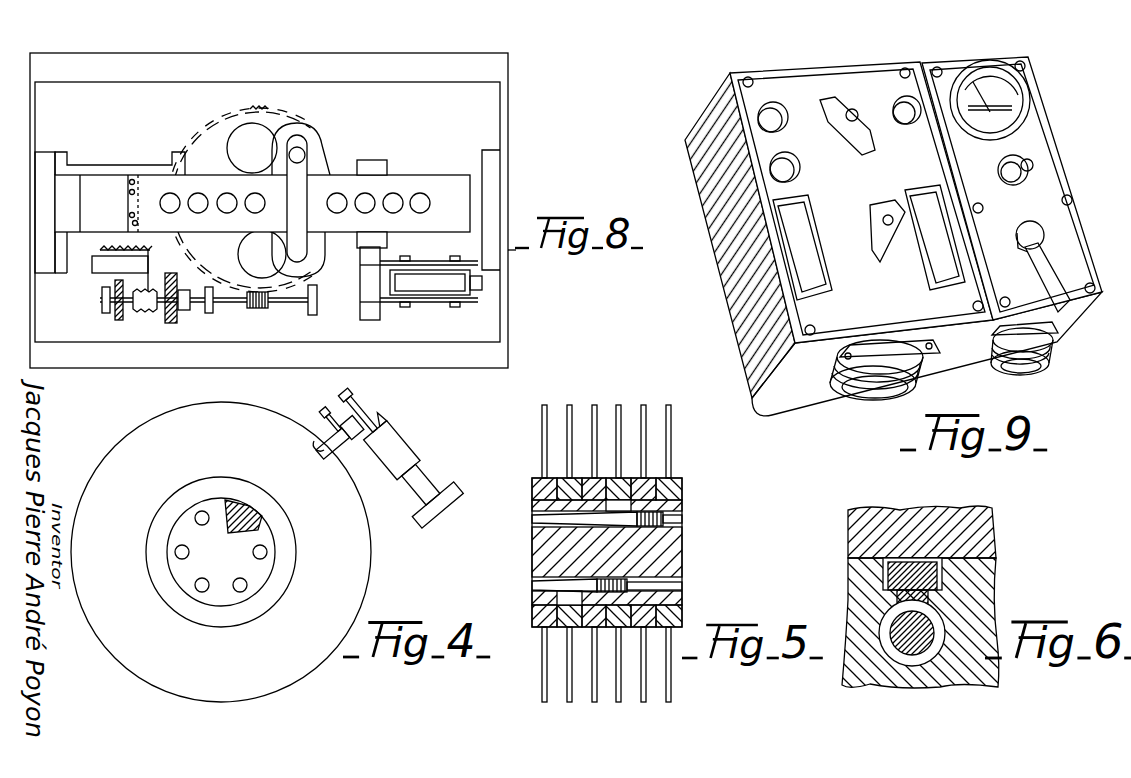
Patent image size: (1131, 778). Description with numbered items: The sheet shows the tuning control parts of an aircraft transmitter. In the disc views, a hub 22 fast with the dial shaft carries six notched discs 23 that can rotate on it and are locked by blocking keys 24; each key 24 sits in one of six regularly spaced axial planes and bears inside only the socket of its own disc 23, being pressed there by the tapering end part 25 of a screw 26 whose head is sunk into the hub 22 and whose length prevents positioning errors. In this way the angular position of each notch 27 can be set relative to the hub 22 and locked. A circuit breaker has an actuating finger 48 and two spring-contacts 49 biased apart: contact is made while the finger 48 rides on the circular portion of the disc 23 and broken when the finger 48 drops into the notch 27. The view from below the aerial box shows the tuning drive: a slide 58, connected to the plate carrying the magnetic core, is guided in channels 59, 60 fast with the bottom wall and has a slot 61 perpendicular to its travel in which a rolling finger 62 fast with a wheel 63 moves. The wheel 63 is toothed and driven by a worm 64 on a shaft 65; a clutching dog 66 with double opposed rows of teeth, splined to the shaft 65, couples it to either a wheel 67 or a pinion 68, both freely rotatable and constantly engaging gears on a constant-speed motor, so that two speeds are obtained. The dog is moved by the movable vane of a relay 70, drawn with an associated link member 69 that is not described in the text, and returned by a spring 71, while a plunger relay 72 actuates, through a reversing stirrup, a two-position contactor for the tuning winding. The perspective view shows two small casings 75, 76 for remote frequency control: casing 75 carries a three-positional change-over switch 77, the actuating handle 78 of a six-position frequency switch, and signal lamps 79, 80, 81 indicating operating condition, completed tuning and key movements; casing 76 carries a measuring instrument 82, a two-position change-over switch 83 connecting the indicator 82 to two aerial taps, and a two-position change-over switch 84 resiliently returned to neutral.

In FIG. 4, the hub 22 is at (185, 580).
In FIG. 5, the hub 22 is at (540, 562).
In FIG. 6, the hub 22 is at (992, 622).
In FIG. 4, the notched disc 23 is at (250, 417).
In FIG. 5, the notched disc 23 is at (543, 432).
In FIG. 5, the blocking key 24 is at (620, 504).
In FIG. 6, the blocking key 24 is at (946, 560).
In FIG. 5, the tapering end part 25 is at (568, 517).
In FIG. 5, the screw 26 is at (672, 512).
In FIG. 4, the notch 27 is at (316, 444).
In FIG. 4, the actuating finger 48 is at (346, 440).
In FIG. 4, the spring-contact 49 is at (388, 423).
In FIG. 8, the slide 58 is at (146, 215).
In FIG. 8, the channel 59 is at (115, 167).
In FIG. 8, the channel 60 is at (376, 167).
In FIG. 8, the slot 61 is at (297, 177).
In FIG. 8, the rolling finger 62 is at (290, 155).
In FIG. 8, the wheel 63 is at (240, 280).
In FIG. 8, the worm 64 is at (258, 308).
In FIG. 8, the shaft 65 is at (296, 303).
In FIG. 8, the clutching dog 66 is at (145, 310).
In FIG. 8, the wheel 67 is at (173, 316).
In FIG. 8, the pinion 68 is at (110, 308).
In FIG. 8, the link 69 is at (150, 272).
In FIG. 8, the relay 70 is at (100, 268).
In FIG. 8, the spring 71 is at (100, 252).
In FIG. 8, the plunger relay 72 is at (432, 282).
In FIG. 9, the casing 75 is at (782, 80).
In FIG. 9, the casing 76 is at (950, 70).
In FIG. 9, the 3-positional change-over switch 77 is at (852, 108).
In FIG. 9, the actuating handle 78 is at (868, 236).
In FIG. 9, the signal lamp 79 is at (910, 125).
In FIG. 9, the signal lamp 80 is at (783, 110).
In FIG. 9, the signal lamp 81 is at (801, 166).
In FIG. 9, the measuring instrument 82 is at (1020, 116).
In FIG. 9, the change-over switch with two positions 83 is at (1035, 165).
In FIG. 9, the change over switch with two positions 84 is at (1050, 246).